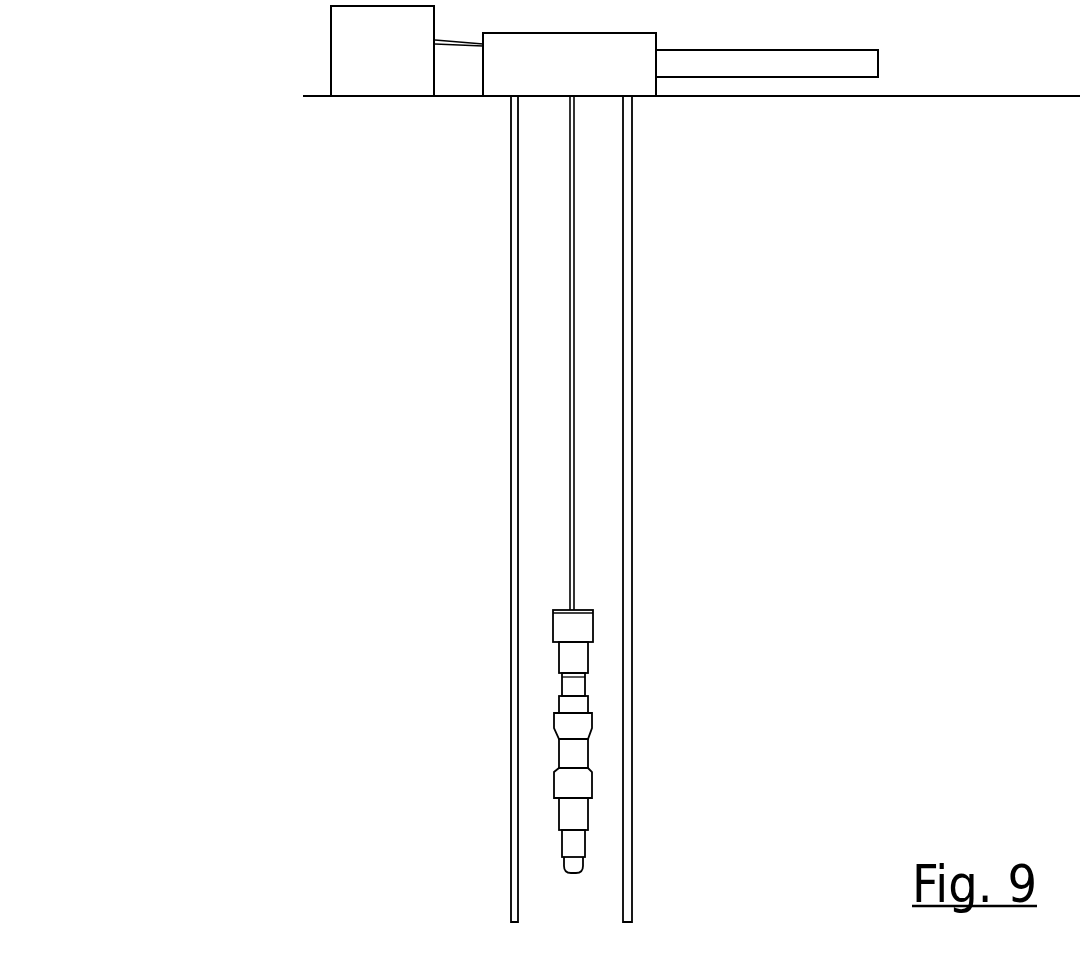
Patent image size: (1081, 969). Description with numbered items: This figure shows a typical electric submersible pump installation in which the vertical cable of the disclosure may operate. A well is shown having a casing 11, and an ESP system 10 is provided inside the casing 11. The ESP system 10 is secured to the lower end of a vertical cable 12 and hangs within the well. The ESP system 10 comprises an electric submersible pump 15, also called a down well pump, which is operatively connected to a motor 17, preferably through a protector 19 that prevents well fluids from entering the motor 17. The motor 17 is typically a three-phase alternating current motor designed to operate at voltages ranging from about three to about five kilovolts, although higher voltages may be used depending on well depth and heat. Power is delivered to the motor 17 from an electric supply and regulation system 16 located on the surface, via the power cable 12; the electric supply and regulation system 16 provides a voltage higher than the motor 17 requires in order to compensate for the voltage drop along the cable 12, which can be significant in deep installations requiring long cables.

The ESP system 10 is at (462, 737).
The casing 11 is at (510, 378).
The vertical cable 12 is at (568, 257).
The electric submersible pump 15 is at (566, 790).
The electric supply and regulation system 16 is at (379, 48).
The motor 17 is at (567, 628).
The protector 19 is at (566, 707).